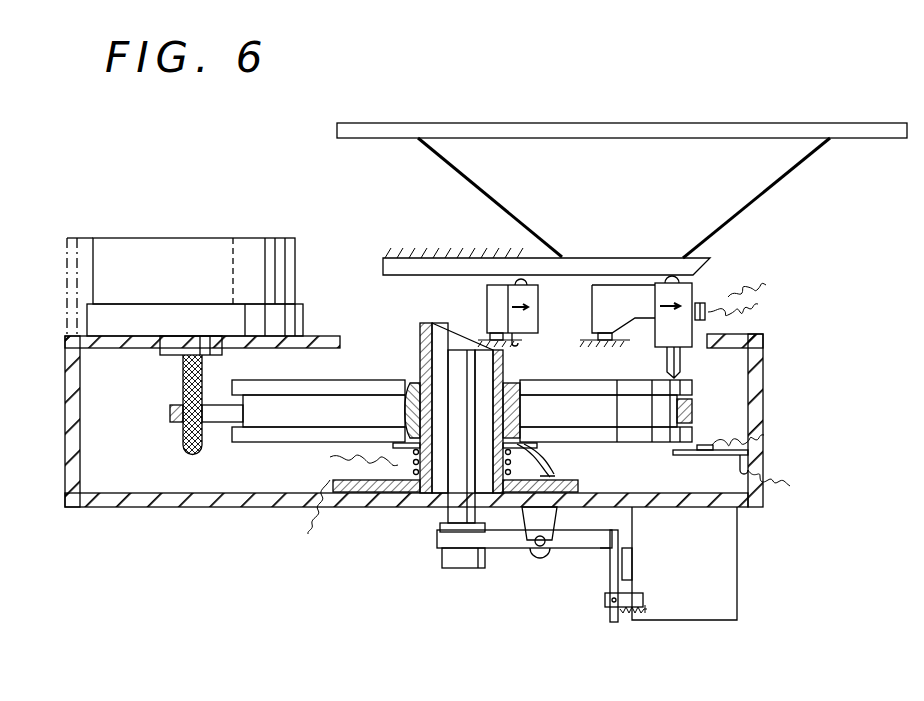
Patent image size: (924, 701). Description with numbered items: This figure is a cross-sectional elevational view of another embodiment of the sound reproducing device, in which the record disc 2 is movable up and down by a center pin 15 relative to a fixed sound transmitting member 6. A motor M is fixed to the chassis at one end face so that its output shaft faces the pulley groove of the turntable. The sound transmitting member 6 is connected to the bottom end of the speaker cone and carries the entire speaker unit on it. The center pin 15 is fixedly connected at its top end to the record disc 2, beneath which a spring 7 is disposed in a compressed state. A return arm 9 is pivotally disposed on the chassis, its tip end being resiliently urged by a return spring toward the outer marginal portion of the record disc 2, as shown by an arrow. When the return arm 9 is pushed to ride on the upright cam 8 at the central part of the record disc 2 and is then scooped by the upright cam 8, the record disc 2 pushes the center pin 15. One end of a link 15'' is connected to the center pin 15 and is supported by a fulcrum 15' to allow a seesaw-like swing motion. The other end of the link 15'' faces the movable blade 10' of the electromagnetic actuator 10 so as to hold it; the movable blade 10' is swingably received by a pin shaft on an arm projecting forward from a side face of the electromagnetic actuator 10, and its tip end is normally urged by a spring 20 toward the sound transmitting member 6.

The motor M is at (212, 252).
The record disc 2 is at (693, 388).
The sound transmitting member 6 is at (700, 268).
The spring 7 is at (400, 492).
The upright cam 8 is at (497, 350).
The return arm 9 is at (511, 303).
The electromagnetic actuator 10 is at (725, 563).
The movable blade 10' is at (591, 593).
The center pin 15 is at (435, 477).
The fulcrum 15' is at (514, 579).
The link 15'' is at (524, 564).
The spring 20 is at (628, 612).